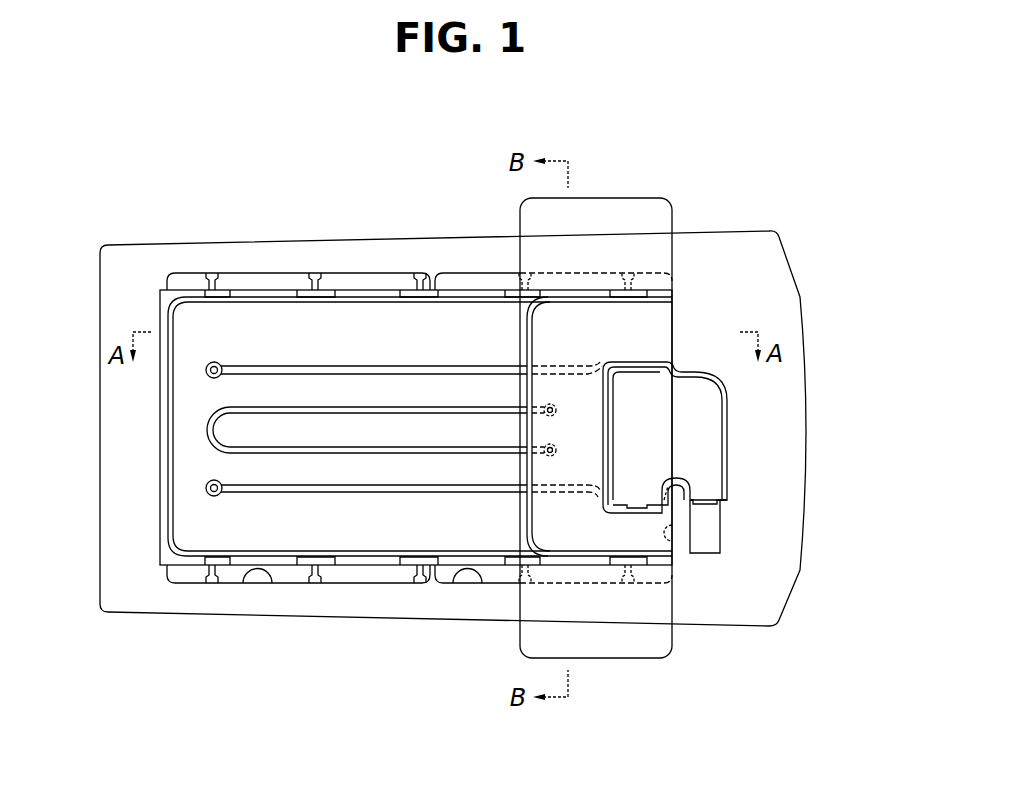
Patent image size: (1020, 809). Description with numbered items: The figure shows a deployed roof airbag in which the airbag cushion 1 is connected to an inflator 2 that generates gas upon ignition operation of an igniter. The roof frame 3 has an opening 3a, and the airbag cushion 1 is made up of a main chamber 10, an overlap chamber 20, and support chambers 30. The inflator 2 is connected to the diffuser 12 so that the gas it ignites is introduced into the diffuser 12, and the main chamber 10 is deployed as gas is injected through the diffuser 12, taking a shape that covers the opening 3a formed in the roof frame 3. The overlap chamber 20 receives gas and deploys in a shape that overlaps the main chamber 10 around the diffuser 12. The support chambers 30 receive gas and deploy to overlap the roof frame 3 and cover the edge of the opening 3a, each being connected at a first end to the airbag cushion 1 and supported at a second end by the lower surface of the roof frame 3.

The airbag cushion 1 is at (150, 437).
The inflator 2 is at (712, 530).
The roof frame 3 is at (120, 513).
The opening 3a is at (250, 572).
The main chamber 10 is at (355, 335).
The diffuser 12 is at (697, 435).
The overlap chamber 20 is at (530, 338).
The support chambers 30 is at (652, 205).